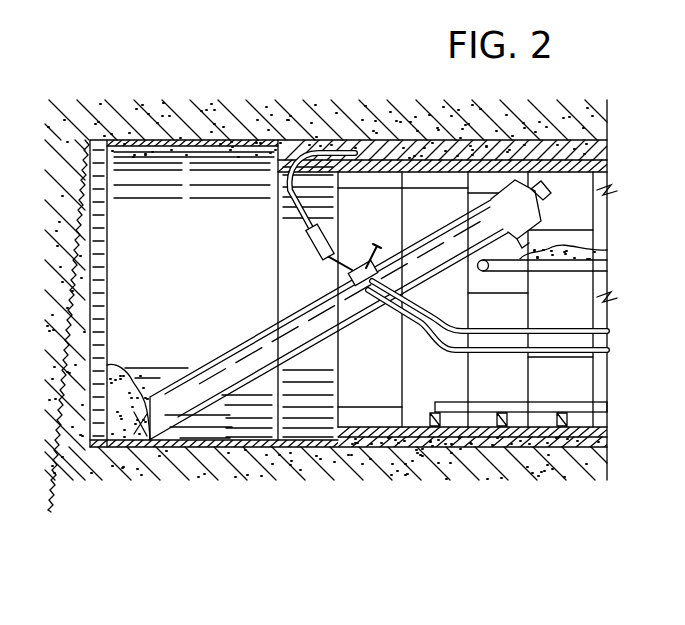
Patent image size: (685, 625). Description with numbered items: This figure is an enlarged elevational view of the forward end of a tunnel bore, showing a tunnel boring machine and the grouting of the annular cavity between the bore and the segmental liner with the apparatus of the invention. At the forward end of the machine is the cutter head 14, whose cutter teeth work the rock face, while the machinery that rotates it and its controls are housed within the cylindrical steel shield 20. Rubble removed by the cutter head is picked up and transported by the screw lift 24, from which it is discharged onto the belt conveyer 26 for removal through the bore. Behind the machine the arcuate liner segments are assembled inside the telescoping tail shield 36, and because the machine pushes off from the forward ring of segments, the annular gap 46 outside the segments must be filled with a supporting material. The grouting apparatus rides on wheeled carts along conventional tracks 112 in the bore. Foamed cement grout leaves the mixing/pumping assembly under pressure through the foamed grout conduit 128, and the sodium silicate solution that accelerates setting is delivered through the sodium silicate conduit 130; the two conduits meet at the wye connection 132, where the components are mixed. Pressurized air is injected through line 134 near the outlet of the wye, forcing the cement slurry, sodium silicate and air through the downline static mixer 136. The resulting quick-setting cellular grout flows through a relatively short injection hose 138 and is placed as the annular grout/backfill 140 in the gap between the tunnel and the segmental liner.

The cutter head 14 is at (88, 347).
The cylindrical steel shield 20 is at (215, 248).
The screw lift 24 is at (210, 365).
The belt conveyer 26 is at (592, 274).
The telescoping tail shield 36 is at (300, 250).
The annular gap 46 is at (452, 142).
The tracks 112 is at (563, 400).
The foamed grout conduit 128 is at (583, 352).
The sodium silicate conduit 130 is at (580, 330).
The wye connection 132 is at (350, 282).
The air line 134 is at (368, 246).
The static mixer 136 is at (322, 256).
The injection hose 138 is at (292, 158).
The annular grout/backfill 140 is at (608, 153).